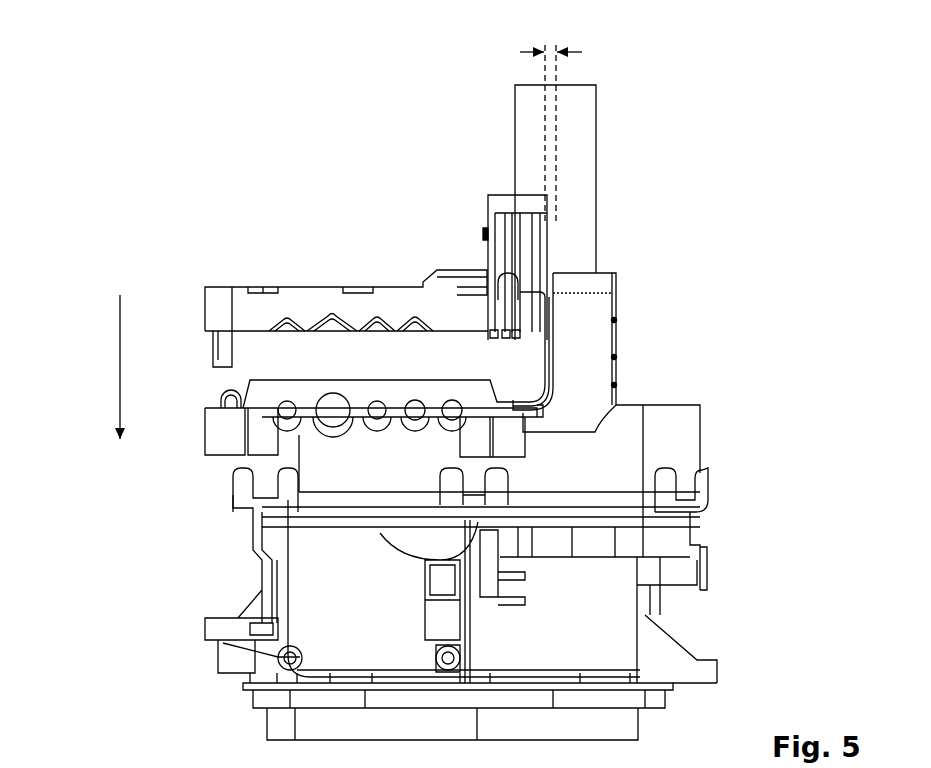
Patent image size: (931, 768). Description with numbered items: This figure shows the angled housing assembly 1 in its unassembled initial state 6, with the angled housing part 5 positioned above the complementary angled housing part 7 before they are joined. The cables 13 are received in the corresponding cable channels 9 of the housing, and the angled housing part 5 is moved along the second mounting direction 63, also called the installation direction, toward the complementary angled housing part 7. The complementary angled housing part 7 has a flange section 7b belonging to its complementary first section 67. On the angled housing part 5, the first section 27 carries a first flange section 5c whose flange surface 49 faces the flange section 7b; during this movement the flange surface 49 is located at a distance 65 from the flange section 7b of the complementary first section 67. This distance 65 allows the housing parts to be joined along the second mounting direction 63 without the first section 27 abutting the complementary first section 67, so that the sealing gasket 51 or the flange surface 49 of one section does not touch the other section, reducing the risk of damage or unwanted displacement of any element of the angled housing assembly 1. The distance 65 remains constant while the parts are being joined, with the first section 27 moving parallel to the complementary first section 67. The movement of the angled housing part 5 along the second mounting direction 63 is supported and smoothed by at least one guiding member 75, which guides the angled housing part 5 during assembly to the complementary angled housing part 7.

The angled housing assembly 1 is at (407, 204).
The angled housing part 5 is at (238, 300).
The first flange section 5c is at (557, 226).
The initial state 6 is at (446, 391).
The complementary angled housing part 7 is at (578, 388).
The flange section 7b is at (206, 396).
The cable channel 9 is at (352, 402).
The cable 13 is at (582, 120).
The first section 27 is at (497, 194).
The flange surface 49 is at (497, 256).
The sealing gasket 51 is at (553, 262).
The second mounting direction 63 is at (118, 372).
The distance 65 is at (570, 50).
The complementary first section 67 is at (541, 303).
The guiding member 75 is at (222, 360).